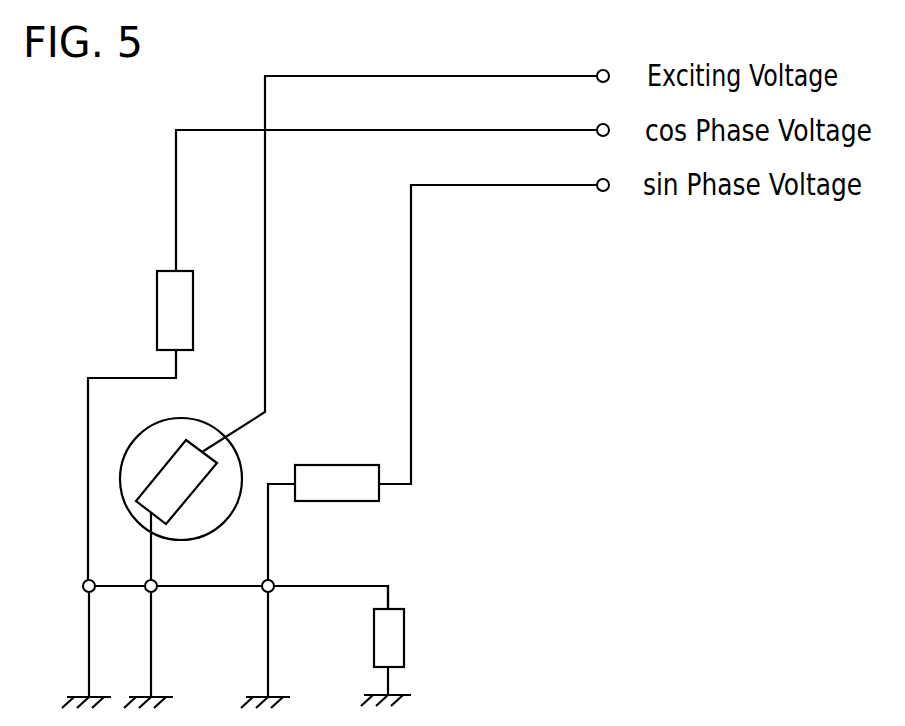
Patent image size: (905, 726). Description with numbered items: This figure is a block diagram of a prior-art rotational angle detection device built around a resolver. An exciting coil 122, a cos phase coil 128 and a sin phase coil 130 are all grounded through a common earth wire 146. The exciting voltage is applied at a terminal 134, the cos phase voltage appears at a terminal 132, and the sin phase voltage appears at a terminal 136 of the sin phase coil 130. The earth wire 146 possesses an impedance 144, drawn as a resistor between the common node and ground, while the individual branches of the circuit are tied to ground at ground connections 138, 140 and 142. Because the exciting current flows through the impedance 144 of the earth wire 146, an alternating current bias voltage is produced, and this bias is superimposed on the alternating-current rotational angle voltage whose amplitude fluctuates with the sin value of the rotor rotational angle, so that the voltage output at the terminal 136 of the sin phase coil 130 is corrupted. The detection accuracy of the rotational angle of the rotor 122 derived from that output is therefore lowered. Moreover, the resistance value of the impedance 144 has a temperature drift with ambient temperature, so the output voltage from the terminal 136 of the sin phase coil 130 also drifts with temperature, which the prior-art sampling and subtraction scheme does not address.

The exciting coil 122 is at (165, 492).
The cos phase coil 128 is at (168, 327).
The sin phase coil 130 is at (355, 483).
The terminal 132 is at (608, 115).
The terminal 134 is at (608, 61).
The terminal 136 is at (608, 170).
The ground 138 is at (90, 652).
The ground 140 is at (150, 655).
The ground 142 is at (268, 648).
The impedance 144 is at (392, 659).
The earth wire 146 is at (390, 593).